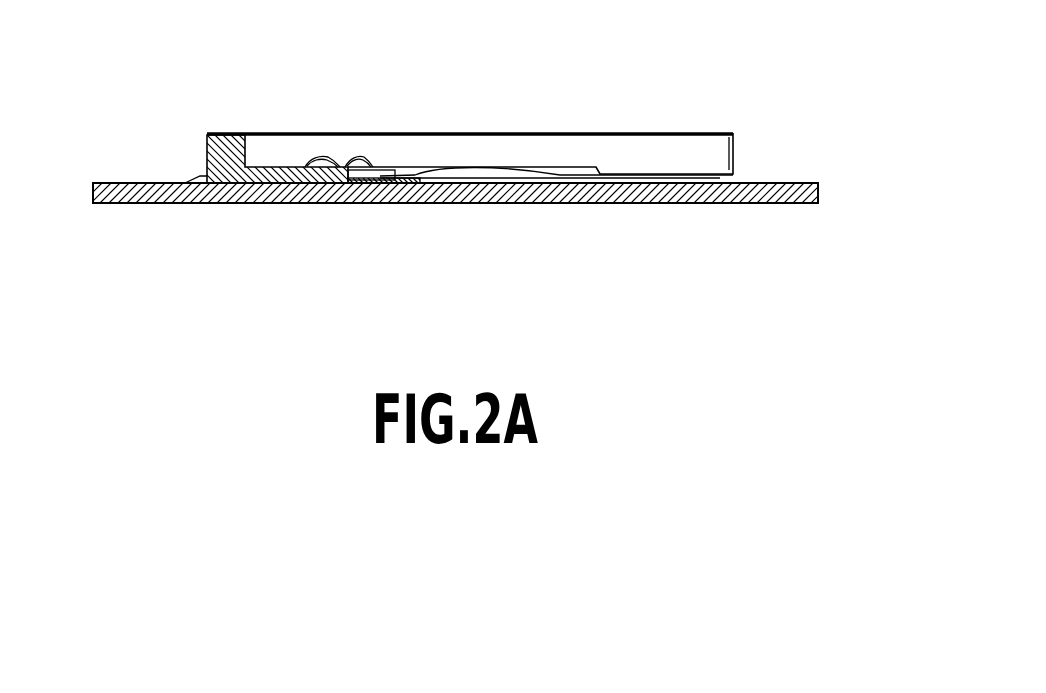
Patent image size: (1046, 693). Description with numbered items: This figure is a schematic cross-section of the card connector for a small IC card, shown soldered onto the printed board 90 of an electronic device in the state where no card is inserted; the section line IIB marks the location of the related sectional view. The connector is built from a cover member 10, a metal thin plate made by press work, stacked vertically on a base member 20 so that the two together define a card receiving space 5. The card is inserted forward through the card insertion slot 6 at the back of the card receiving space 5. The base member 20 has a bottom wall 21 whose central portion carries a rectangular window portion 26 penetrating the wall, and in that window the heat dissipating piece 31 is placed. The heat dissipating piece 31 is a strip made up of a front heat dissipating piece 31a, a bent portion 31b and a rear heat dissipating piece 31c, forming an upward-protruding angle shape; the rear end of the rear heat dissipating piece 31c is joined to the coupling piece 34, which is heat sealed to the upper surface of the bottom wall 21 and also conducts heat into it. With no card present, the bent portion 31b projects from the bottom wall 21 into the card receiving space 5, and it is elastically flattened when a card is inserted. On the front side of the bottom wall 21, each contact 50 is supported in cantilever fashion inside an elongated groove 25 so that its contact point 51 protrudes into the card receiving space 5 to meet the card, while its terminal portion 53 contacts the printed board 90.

The card receiving space 5 is at (474, 149).
The card insertion slot 6 is at (736, 151).
The cover member 10 is at (541, 132).
The base member 20 is at (205, 152).
The bottom wall 21 is at (368, 184).
The elongated groove 25 is at (261, 163).
The window portion 26 is at (405, 182).
The heat dissipating piece 31 is at (469, 186).
The front heat dissipating piece 31a is at (428, 160).
The bent portion 31b is at (497, 166).
The rear heat dissipating piece 31c is at (546, 176).
The coupling piece 34 is at (647, 173).
The contact 50 is at (308, 156).
The contact point 51 is at (366, 158).
The terminal portion 53 is at (194, 181).
The printed board 90 is at (617, 206).
The section line IIB is at (446, 160).